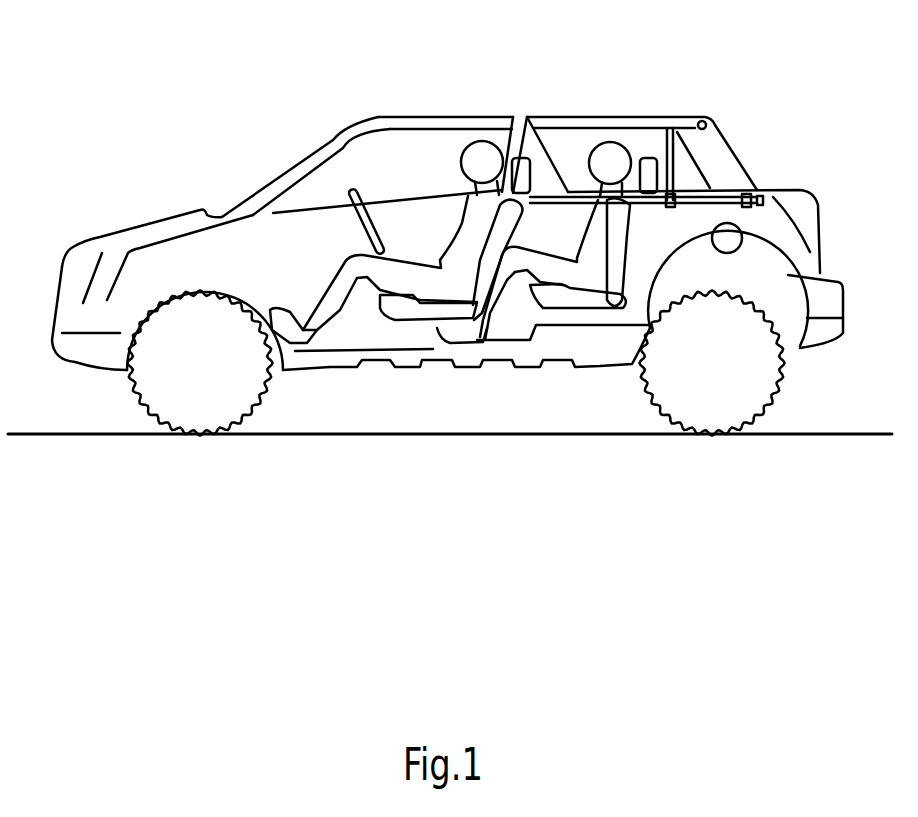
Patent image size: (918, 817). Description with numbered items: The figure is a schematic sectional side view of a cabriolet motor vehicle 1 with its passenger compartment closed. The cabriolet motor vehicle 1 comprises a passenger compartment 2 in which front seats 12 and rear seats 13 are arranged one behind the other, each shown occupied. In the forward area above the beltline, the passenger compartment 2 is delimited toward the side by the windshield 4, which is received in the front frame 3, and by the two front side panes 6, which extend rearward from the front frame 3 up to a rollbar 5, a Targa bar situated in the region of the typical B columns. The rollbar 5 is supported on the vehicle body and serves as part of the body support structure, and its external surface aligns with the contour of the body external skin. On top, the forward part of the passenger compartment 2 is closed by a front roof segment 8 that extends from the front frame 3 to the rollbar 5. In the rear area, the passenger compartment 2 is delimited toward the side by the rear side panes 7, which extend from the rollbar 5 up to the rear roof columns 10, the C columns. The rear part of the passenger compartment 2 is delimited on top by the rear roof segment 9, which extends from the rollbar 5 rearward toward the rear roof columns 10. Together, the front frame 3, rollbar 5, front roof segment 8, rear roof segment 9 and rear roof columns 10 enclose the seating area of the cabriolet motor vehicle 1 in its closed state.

The cabriolet motor vehicle 1 is at (214, 181).
The passenger compartment 2 is at (388, 168).
The front frame 3 is at (330, 137).
The windshield 4 is at (277, 178).
The rollbar 5 is at (543, 140).
The front side panes 6 is at (428, 148).
The rear side panes 7 is at (653, 140).
The front roof segment 8 is at (475, 122).
The rear roof segment 9 is at (612, 120).
The rear roof columns 10 is at (713, 153).
The front seats 12 is at (412, 308).
The rear seats 13 is at (570, 302).